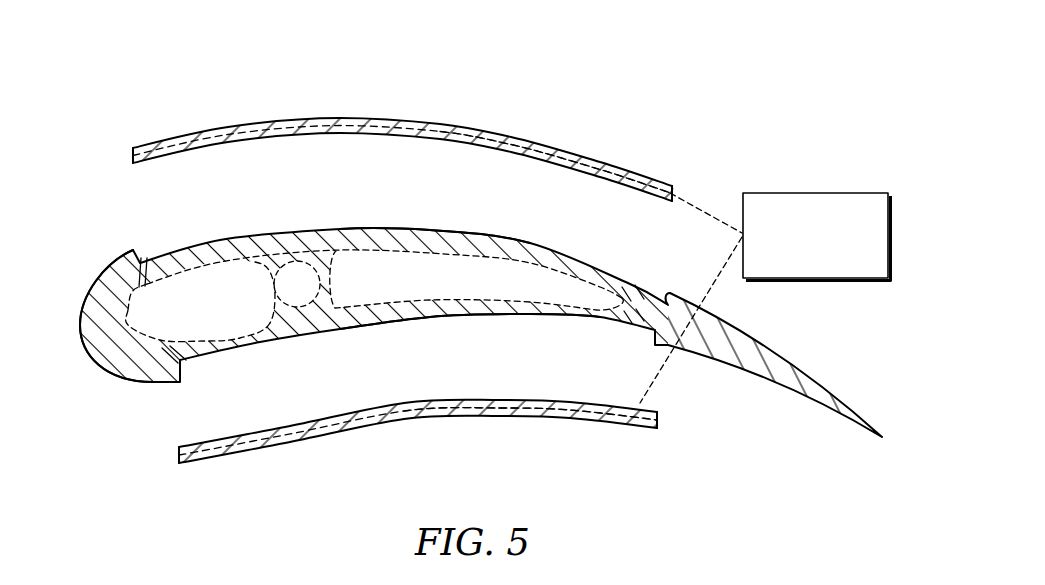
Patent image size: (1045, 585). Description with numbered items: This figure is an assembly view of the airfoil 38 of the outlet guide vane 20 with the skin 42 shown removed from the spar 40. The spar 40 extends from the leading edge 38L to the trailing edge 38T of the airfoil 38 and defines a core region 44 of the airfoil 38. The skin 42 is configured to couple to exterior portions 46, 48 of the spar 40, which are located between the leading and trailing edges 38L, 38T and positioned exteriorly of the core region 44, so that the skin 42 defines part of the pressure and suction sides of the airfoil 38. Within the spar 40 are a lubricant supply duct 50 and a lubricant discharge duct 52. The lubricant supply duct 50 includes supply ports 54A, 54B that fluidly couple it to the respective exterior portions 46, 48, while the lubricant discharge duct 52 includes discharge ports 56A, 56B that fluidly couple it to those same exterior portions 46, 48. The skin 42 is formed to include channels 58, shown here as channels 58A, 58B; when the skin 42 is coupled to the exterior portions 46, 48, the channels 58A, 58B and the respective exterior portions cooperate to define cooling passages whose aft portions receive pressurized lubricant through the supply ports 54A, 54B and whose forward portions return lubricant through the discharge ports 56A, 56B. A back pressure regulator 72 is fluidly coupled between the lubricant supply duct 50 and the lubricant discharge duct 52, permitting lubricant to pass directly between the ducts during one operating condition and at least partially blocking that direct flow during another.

The outlet guide vane 20 is at (683, 73).
The airfoil 38 is at (608, 96).
The leading edge 38L is at (72, 304).
The trailing edge 38T is at (868, 434).
The spar 40 is at (362, 223).
The skin 42 is at (441, 110).
The core region 44 is at (304, 241).
The exterior portion 46 is at (422, 223).
The exterior portion 48 is at (459, 334).
The lubricant supply duct 50 is at (502, 258).
The lubricant discharge duct 52 is at (213, 259).
The supply port 54A is at (662, 303).
The supply port 54B is at (652, 320).
The discharge port 56A is at (141, 256).
The discharge port 56B is at (190, 379).
The channels 58 is at (822, 192).
The channel 58A is at (529, 130).
The channel 58B is at (571, 435).
The back pressure regulator 72 is at (318, 258).